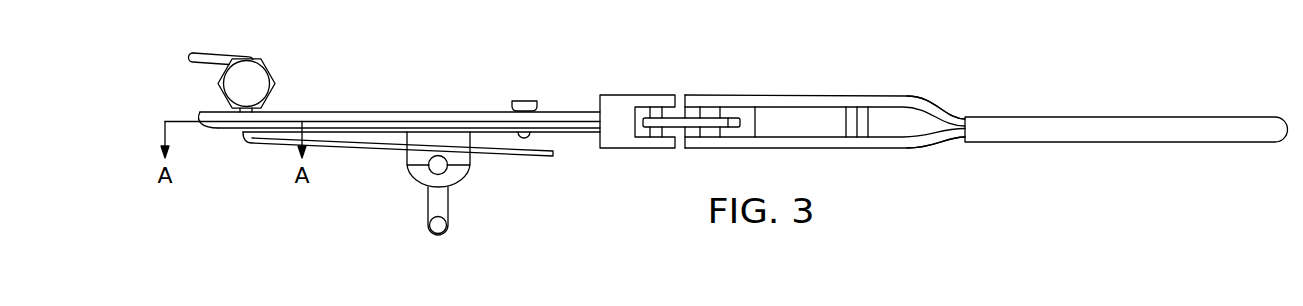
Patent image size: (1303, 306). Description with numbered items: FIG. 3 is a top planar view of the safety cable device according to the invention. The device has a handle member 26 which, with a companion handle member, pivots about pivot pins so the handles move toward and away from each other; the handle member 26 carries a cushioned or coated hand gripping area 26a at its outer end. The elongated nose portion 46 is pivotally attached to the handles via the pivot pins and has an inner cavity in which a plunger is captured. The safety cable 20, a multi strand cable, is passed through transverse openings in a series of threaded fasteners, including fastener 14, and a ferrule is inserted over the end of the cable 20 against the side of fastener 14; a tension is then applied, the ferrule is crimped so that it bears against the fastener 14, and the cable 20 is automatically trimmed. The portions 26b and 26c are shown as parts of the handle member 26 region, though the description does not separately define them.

The threaded fastener 14 is at (247, 83).
The elongated nose portion 46 is at (472, 112).
The safety cable 20 is at (543, 158).
The handle member 26 is at (948, 141).
The hand gripping area 26a is at (1165, 125).
The cable sheath 26b is at (881, 100).
The inner tubing 26c is at (862, 145).